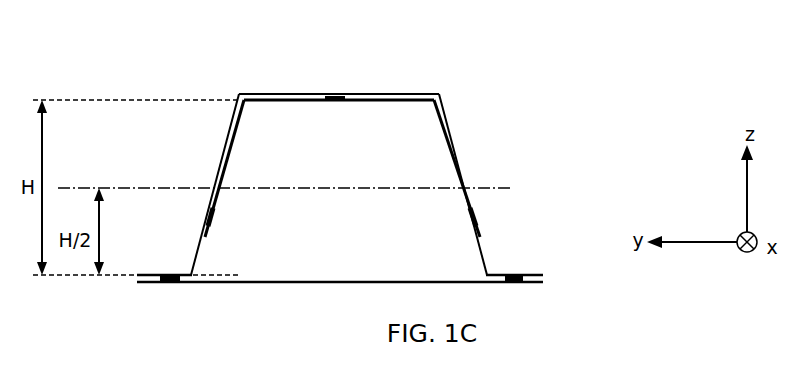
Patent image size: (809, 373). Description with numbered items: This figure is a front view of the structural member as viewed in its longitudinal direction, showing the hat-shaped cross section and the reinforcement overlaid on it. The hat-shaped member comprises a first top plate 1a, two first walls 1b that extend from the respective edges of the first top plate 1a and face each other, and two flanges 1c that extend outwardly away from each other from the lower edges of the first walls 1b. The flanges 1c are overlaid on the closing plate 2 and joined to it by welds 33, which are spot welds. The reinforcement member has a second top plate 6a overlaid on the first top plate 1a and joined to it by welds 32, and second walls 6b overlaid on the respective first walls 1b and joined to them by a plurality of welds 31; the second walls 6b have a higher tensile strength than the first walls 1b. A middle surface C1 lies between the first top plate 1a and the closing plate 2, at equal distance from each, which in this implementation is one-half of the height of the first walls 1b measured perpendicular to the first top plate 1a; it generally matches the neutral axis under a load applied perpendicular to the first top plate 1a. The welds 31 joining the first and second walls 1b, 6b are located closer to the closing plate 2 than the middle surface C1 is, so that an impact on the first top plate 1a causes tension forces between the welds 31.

The first top plate 1a is at (354, 101).
The first walls 1b is at (227, 160).
The flanges 1c is at (150, 273).
The closing plate 2 is at (340, 283).
The second top plate 6a is at (403, 94).
The second walls 6b is at (229, 136).
The welds 31 is at (213, 216).
The welds 32 is at (338, 95).
The welds 33 is at (172, 273).
The middle surface C1 is at (487, 187).